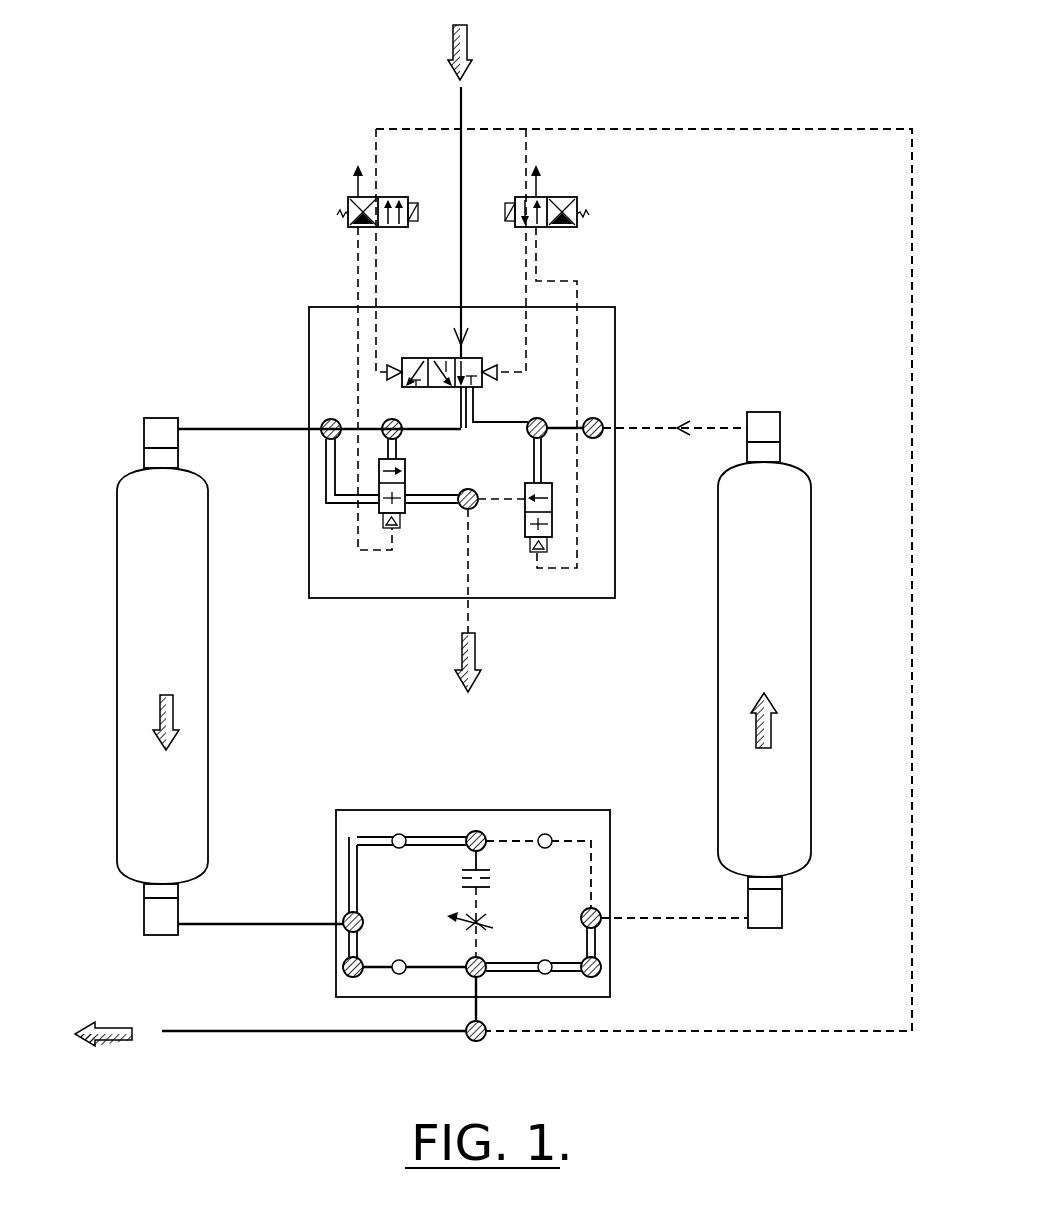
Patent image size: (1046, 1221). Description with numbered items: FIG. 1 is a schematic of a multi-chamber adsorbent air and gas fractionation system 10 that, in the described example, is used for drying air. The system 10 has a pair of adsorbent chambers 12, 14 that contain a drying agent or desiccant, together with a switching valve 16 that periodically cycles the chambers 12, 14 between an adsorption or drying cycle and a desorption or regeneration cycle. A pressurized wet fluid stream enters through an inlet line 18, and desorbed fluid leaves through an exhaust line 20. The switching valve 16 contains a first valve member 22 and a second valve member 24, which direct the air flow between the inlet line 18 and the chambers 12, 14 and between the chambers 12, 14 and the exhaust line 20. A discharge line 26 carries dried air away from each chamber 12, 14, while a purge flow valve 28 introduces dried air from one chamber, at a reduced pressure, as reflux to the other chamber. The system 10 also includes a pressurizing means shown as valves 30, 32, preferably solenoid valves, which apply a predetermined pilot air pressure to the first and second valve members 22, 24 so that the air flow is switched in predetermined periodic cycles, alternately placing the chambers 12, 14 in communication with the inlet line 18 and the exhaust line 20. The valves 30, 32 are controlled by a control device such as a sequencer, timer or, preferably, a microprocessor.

The multi-chamber adsorbent air and gas fractionation system 10 is at (644, 520).
The adsorbent chamber 12 is at (198, 676).
The adsorbent chamber 14 is at (615, 428).
The switching valve 16 is at (621, 352).
The inlet line 18 is at (493, 191).
The exhaust line 20 is at (493, 600).
The first valve member 22 is at (417, 375).
The second valve member 24 is at (380, 458).
The discharge line 26 is at (280, 1050).
The purge flow valve 28 is at (473, 887).
The valve 30 is at (365, 207).
The valve 32 is at (550, 193).